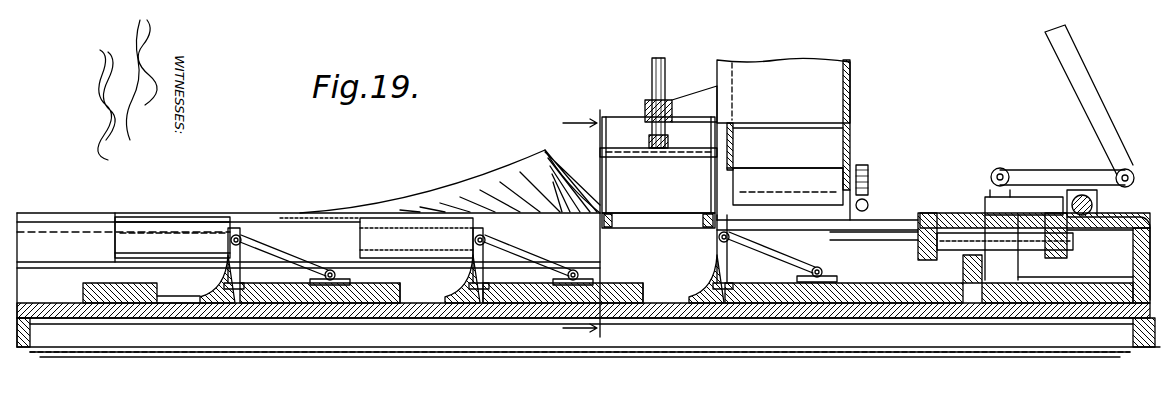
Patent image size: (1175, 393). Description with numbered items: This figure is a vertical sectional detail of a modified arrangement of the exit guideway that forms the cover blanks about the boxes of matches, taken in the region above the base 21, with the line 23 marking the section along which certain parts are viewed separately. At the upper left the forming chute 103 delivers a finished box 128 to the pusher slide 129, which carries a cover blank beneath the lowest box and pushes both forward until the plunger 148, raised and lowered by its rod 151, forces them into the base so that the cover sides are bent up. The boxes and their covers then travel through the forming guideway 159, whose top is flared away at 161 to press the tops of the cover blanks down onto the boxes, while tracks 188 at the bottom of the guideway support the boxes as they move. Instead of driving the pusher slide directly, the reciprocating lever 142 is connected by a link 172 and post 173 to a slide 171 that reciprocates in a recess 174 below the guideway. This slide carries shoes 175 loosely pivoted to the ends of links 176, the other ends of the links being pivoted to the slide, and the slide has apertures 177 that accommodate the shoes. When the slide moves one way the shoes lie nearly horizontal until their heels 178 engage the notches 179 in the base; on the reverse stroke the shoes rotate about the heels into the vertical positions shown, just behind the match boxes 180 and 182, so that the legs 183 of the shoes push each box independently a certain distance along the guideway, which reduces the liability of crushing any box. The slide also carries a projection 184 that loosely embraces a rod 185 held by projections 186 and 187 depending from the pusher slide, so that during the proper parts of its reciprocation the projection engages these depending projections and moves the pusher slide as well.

The base 21 is at (1115, 215).
The section line 23 is at (581, 224).
The forming chute 103 is at (761, 139).
The box 128 is at (817, 176).
The pusher slide 129 is at (957, 215).
The lever 142 is at (1090, 103).
The plunger 148 is at (632, 158).
The rod 151 is at (668, 72).
The forming guideway 159 is at (571, 263).
The flared portion 161 is at (450, 181).
The slide 171 is at (354, 285).
The link 172 is at (1032, 176).
The post 173 is at (985, 178).
The recess 174 is at (435, 278).
The shoes 175 is at (227, 290).
The links 176 is at (262, 250).
The recesses or apertures 177 is at (183, 294).
The heels 178 is at (573, 370).
The notches or recesses 179 is at (238, 285).
The match box 180 is at (658, 221).
The match box 182 is at (172, 237).
The legs 183 is at (228, 258).
The projection 184 is at (962, 264).
The rod 185 is at (945, 215).
The projection 186 is at (1063, 252).
The projection 187 is at (918, 238).
The tracks 188 is at (63, 262).